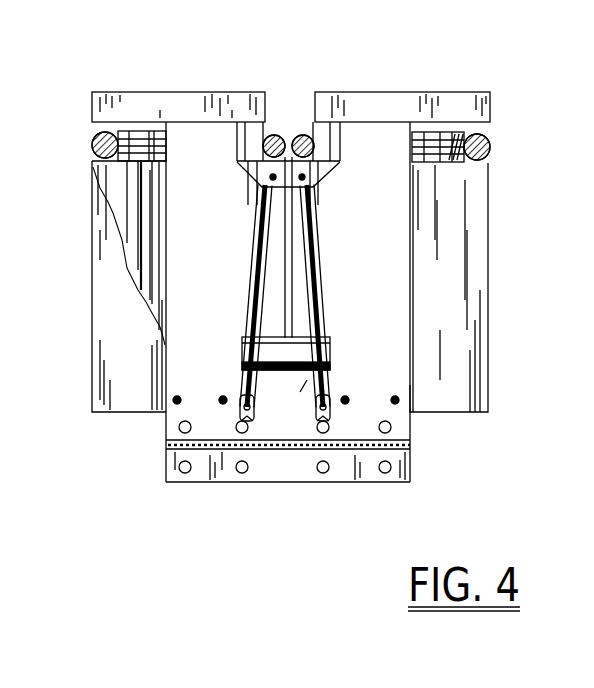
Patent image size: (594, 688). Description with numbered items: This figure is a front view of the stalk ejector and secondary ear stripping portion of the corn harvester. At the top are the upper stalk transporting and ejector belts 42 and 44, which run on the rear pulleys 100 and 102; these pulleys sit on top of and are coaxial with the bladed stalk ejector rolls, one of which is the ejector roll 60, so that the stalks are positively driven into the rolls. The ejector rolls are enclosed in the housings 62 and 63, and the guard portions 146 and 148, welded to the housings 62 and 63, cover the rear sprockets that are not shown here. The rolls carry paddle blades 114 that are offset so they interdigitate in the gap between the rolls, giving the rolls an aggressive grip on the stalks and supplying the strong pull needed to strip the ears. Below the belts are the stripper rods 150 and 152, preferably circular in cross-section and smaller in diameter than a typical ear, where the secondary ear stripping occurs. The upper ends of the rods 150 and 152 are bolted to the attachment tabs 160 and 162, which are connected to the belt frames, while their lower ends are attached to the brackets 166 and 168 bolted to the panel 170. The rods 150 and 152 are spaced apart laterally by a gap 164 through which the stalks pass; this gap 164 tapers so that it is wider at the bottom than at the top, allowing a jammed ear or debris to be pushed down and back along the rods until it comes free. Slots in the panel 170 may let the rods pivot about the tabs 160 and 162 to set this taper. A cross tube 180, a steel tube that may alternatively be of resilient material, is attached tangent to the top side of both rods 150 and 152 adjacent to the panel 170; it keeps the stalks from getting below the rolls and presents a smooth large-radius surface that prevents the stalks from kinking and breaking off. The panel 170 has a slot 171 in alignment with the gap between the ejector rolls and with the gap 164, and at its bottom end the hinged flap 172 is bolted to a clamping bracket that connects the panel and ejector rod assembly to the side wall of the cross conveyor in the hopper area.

The upper belt 42 is at (93, 138).
The rear pulley 102 is at (133, 142).
The guard portion 148 is at (205, 92).
The attachment tab 162 is at (250, 130).
The attachment tab 160 is at (330, 123).
The rear pulley 100 is at (443, 142).
The guard portion 146 is at (473, 92).
The upper belt 44 is at (488, 137).
The stalk ejector roll 60 is at (113, 182).
The slot 171 is at (322, 212).
The gap 164 is at (292, 268).
The stripper rod 150 is at (320, 273).
The stripper rod 152 is at (260, 270).
The cross tube 180 is at (273, 333).
The bracket 168 is at (240, 387).
The bracket 166 is at (333, 387).
The paddle blade 114 is at (287, 400).
The housing 62 is at (487, 297).
The housing 63 is at (139, 354).
The panel 170 is at (395, 387).
The flap 172 is at (407, 473).